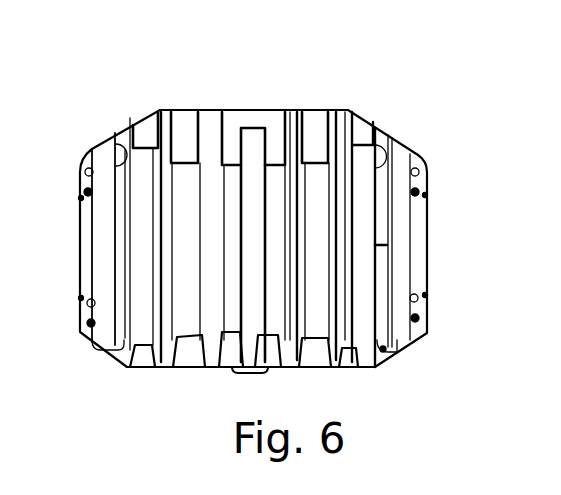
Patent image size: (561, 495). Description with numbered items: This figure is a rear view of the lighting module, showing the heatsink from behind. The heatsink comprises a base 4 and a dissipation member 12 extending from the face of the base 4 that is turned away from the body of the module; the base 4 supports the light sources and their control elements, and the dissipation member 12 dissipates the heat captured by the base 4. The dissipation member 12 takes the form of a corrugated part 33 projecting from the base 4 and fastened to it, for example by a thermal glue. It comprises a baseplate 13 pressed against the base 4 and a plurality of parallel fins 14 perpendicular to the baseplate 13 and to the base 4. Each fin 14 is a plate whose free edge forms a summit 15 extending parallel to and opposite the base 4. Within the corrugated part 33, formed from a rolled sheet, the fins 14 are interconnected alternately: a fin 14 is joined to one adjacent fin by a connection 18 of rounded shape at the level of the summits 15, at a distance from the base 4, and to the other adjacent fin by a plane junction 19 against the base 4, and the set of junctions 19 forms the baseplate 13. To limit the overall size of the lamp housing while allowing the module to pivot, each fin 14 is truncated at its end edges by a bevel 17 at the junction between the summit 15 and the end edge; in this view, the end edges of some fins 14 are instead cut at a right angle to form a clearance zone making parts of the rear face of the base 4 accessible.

The dissipation member 12 is at (452, 193).
The baseplate 13 is at (160, 110).
The fin 14 is at (140, 184).
The summit 15 is at (140, 205).
The bevel 17 is at (336, 130).
The connection of rounded shape 18 is at (275, 147).
The plane junction 19 is at (212, 110).
The base 4 is at (240, 110).
The corrugated part 33 is at (378, 245).